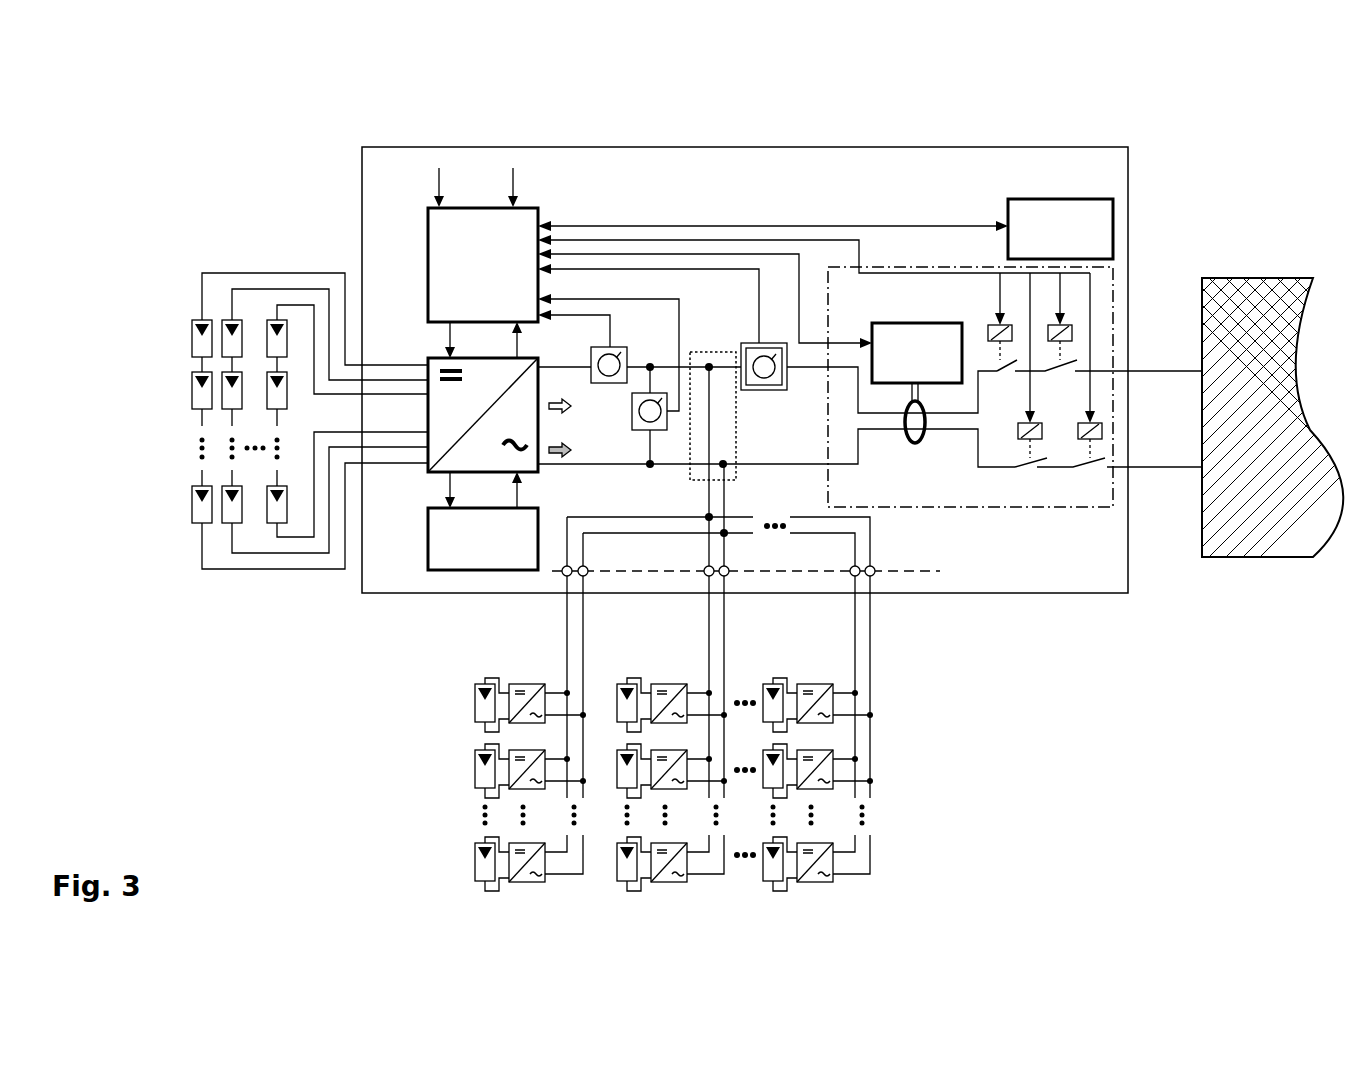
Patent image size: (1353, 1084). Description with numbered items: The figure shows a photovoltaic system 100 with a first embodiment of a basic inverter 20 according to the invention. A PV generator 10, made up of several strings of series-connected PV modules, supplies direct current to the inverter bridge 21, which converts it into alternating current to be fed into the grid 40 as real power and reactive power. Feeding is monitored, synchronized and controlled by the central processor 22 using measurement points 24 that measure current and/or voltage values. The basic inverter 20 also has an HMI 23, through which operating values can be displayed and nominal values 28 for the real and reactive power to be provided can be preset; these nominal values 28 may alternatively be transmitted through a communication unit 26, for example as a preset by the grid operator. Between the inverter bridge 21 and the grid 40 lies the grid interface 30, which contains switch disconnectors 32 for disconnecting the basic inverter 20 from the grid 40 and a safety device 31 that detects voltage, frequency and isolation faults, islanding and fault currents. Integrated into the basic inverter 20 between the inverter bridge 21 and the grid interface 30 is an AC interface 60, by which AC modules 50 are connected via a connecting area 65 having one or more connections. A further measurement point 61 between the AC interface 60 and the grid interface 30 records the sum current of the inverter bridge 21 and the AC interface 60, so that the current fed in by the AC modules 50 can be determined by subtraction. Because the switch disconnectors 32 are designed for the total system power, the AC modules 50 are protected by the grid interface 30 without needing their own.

The photovoltaic system 100 is at (266, 207).
The PV generator 10 is at (181, 362).
The basic inverter 20 is at (402, 145).
The inverter bridge 21 is at (430, 352).
The central processor (CPU) 22 is at (425, 243).
The HMI 23 is at (423, 535).
The measurement points 24 is at (619, 353).
The communication unit 26 is at (1007, 210).
The nominal values 28 is at (536, 162).
The grid interface 30 is at (983, 508).
The safety device 31 is at (913, 446).
The switch disconnectors 32 is at (996, 318).
The grid 40 is at (1222, 277).
The AC modules 50 is at (523, 665).
The AC interface 60 is at (736, 426).
The measurement point 61 is at (765, 337).
The connecting area 65 is at (898, 578).